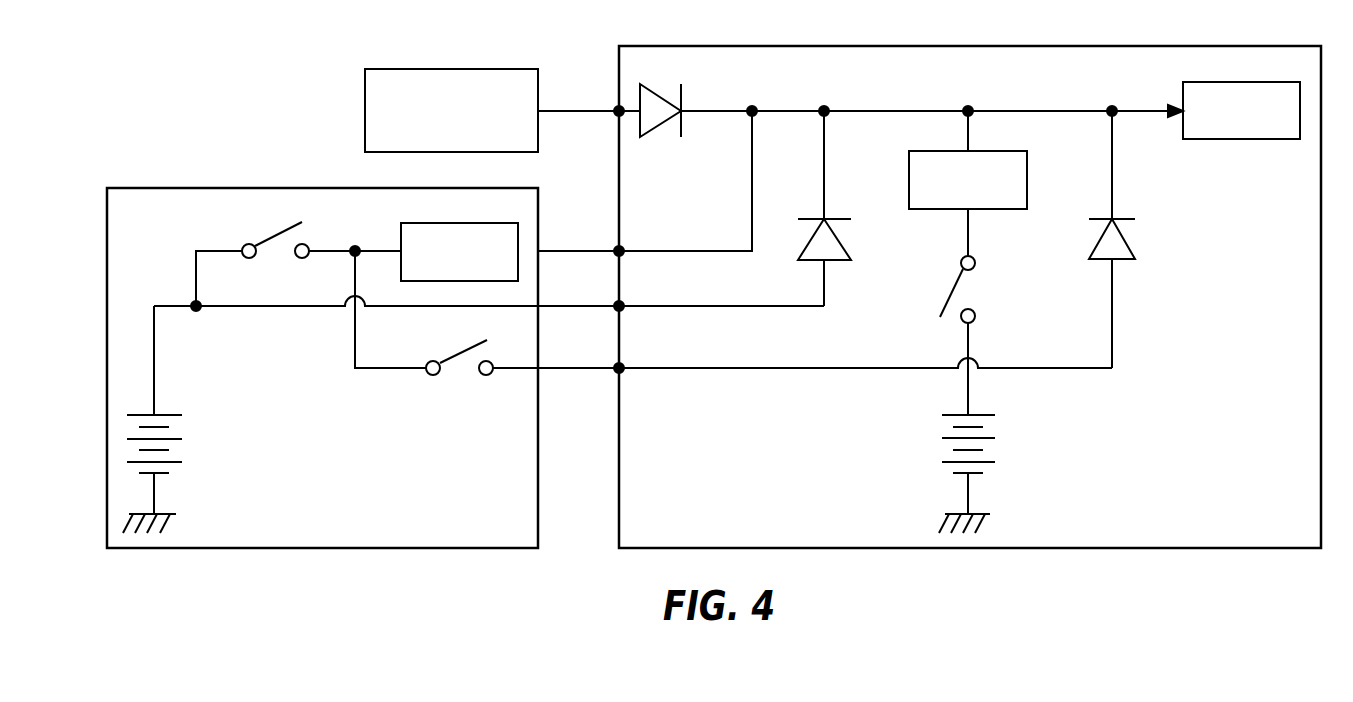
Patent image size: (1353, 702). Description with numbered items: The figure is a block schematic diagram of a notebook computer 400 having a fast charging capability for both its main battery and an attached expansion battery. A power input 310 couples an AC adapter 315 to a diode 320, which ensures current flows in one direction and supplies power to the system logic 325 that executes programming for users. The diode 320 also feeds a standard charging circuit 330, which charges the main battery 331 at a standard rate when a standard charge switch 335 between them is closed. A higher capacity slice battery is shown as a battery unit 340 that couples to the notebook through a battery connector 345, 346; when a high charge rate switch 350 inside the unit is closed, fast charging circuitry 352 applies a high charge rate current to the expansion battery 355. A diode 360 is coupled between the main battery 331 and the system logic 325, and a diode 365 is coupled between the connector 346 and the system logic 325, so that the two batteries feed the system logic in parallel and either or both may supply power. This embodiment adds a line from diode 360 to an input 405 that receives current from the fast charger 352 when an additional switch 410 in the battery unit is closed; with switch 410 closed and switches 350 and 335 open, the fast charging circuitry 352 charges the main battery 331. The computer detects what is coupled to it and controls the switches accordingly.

The power input 310 is at (617, 108).
The AC adapter 315 is at (451, 68).
The diode 320 is at (662, 125).
The system logic 325 is at (1243, 80).
The standard charging circuit 330 is at (995, 150).
The main battery 331 is at (980, 413).
The standard charge switch 335 is at (953, 290).
The battery unit 340 is at (322, 187).
The battery connector 345 is at (617, 248).
The battery connector 346 is at (617, 303).
The high charge rate switch 350 is at (278, 232).
The fast charging circuitry 352 is at (460, 223).
The battery 355 is at (167, 414).
The diode 360 is at (1130, 237).
The diode 365 is at (840, 237).
The notebook computer 400 is at (970, 46).
The input 405 is at (617, 365).
The switch 410 is at (463, 353).